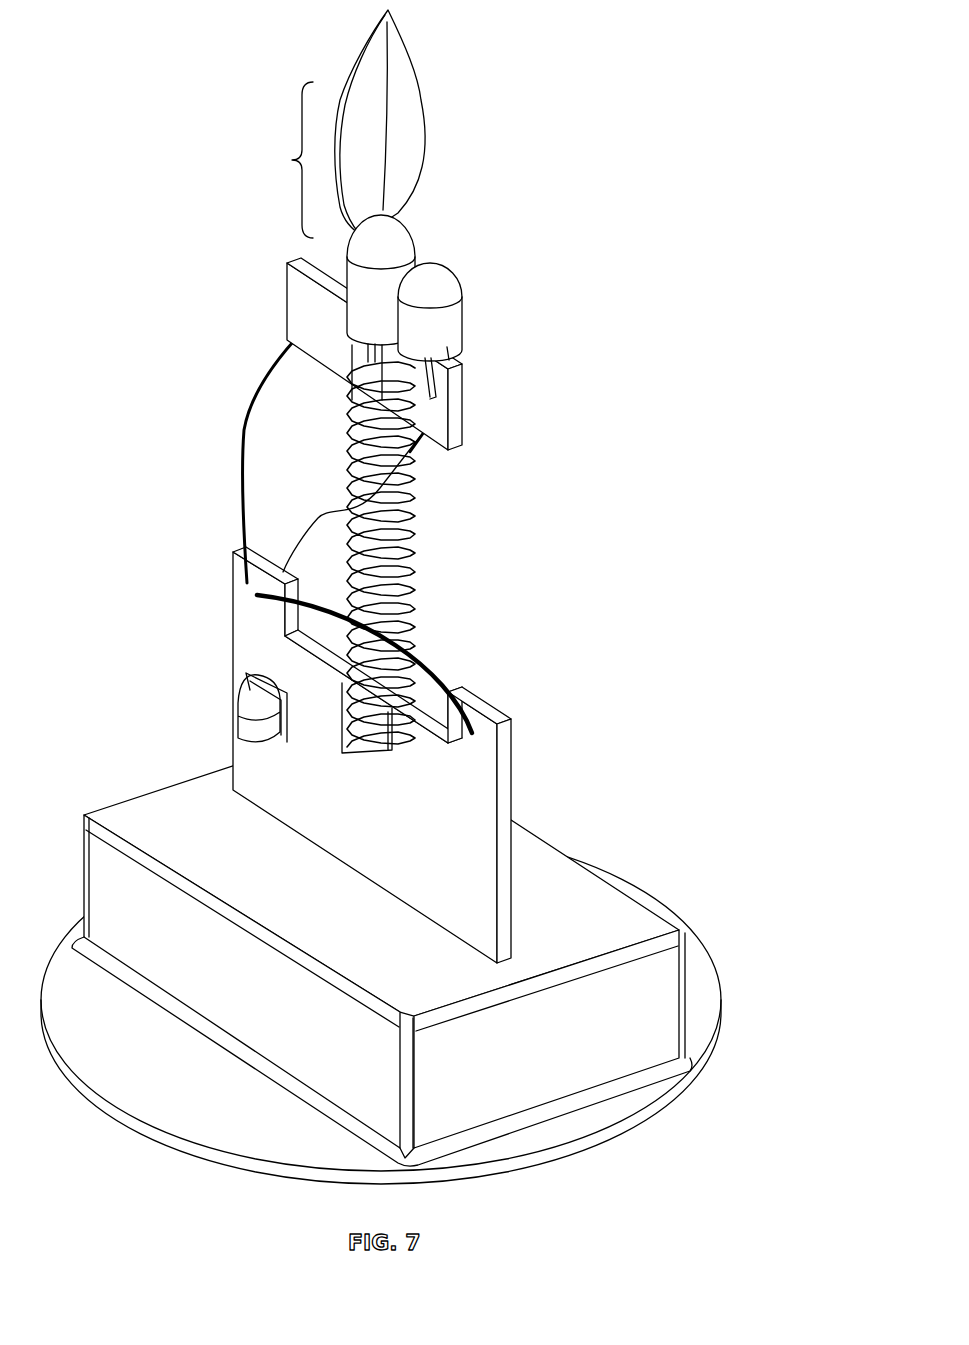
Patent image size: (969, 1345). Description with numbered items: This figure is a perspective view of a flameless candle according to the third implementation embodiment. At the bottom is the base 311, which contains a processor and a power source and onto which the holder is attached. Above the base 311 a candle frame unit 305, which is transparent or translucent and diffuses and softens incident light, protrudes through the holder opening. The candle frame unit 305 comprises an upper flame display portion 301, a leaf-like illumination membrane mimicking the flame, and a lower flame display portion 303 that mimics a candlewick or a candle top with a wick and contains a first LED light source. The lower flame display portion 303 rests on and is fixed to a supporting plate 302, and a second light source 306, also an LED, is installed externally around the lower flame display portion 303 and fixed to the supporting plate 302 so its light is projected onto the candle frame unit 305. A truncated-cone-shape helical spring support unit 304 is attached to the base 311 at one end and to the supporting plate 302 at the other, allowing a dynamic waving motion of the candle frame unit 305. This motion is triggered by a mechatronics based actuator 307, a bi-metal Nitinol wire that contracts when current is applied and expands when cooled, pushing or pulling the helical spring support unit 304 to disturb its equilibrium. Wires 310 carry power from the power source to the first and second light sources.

The upper flame display portion 301 is at (400, 135).
The supporting plate 302 is at (465, 420).
The lower flame display portion 303 is at (395, 240).
The truncated-cone-shape helical spring support unit 304 is at (417, 547).
The candle frame unit 305 is at (272, 160).
The second light source 306 is at (440, 318).
The mechatronics based actuator 307 is at (440, 672).
The wires 310 is at (237, 458).
The base 311 is at (575, 917).